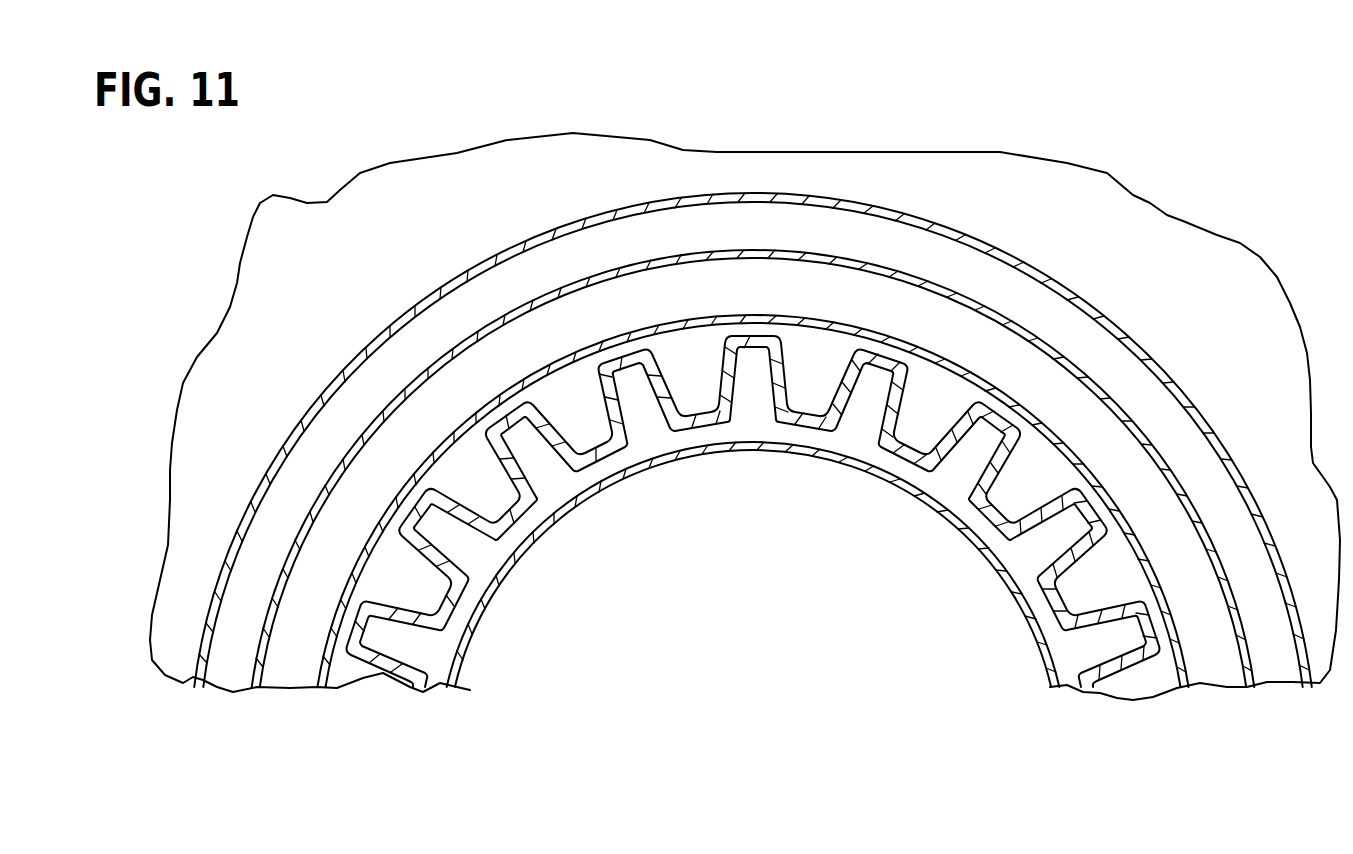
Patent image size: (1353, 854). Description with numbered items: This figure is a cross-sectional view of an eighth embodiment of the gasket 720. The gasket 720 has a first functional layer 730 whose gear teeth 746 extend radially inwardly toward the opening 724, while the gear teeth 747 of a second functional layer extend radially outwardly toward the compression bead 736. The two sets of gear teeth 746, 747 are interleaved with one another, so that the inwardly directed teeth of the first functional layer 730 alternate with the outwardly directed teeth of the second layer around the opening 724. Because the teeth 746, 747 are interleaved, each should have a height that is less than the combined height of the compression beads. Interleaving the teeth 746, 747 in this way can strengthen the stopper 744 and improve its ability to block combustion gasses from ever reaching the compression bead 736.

The gasket 720 is at (1062, 139).
The first functional layer 730 is at (1184, 244).
The compression bead 736 is at (1175, 473).
The stopper 744 is at (754, 533).
The gear teeth 746 is at (716, 360).
The gear teeth 747 is at (833, 427).
The opening 724 is at (737, 629).